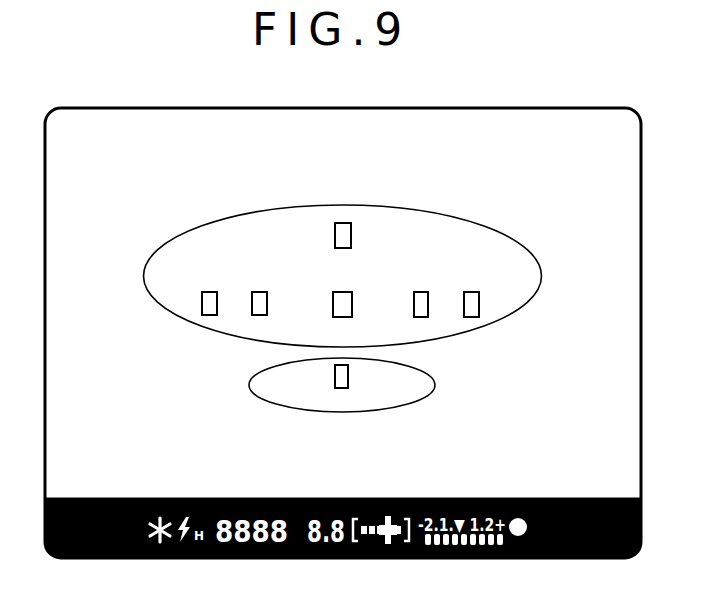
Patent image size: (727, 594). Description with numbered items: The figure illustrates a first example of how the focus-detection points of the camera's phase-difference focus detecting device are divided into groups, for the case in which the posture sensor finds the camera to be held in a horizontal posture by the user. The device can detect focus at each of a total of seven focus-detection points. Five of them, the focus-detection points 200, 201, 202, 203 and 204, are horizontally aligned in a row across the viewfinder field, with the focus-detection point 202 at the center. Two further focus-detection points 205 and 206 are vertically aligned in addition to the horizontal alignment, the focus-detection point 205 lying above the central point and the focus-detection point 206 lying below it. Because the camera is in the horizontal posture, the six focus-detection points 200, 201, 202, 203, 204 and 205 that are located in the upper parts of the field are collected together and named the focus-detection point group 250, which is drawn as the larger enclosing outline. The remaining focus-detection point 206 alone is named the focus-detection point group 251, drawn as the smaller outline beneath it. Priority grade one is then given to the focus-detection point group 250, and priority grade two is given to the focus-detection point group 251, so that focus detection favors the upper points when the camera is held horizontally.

The focus-detection point 200 is at (203, 306).
The focus-detection point 201 is at (255, 312).
The focus-detection point 202 is at (334, 300).
The focus-detection point 203 is at (423, 305).
The focus-detection point 204 is at (473, 303).
The focus-detection point 205 is at (345, 237).
The focus-detection point 206 is at (337, 380).
The focus-detection point group 250 is at (452, 213).
The focus-detection point group 251 is at (358, 413).